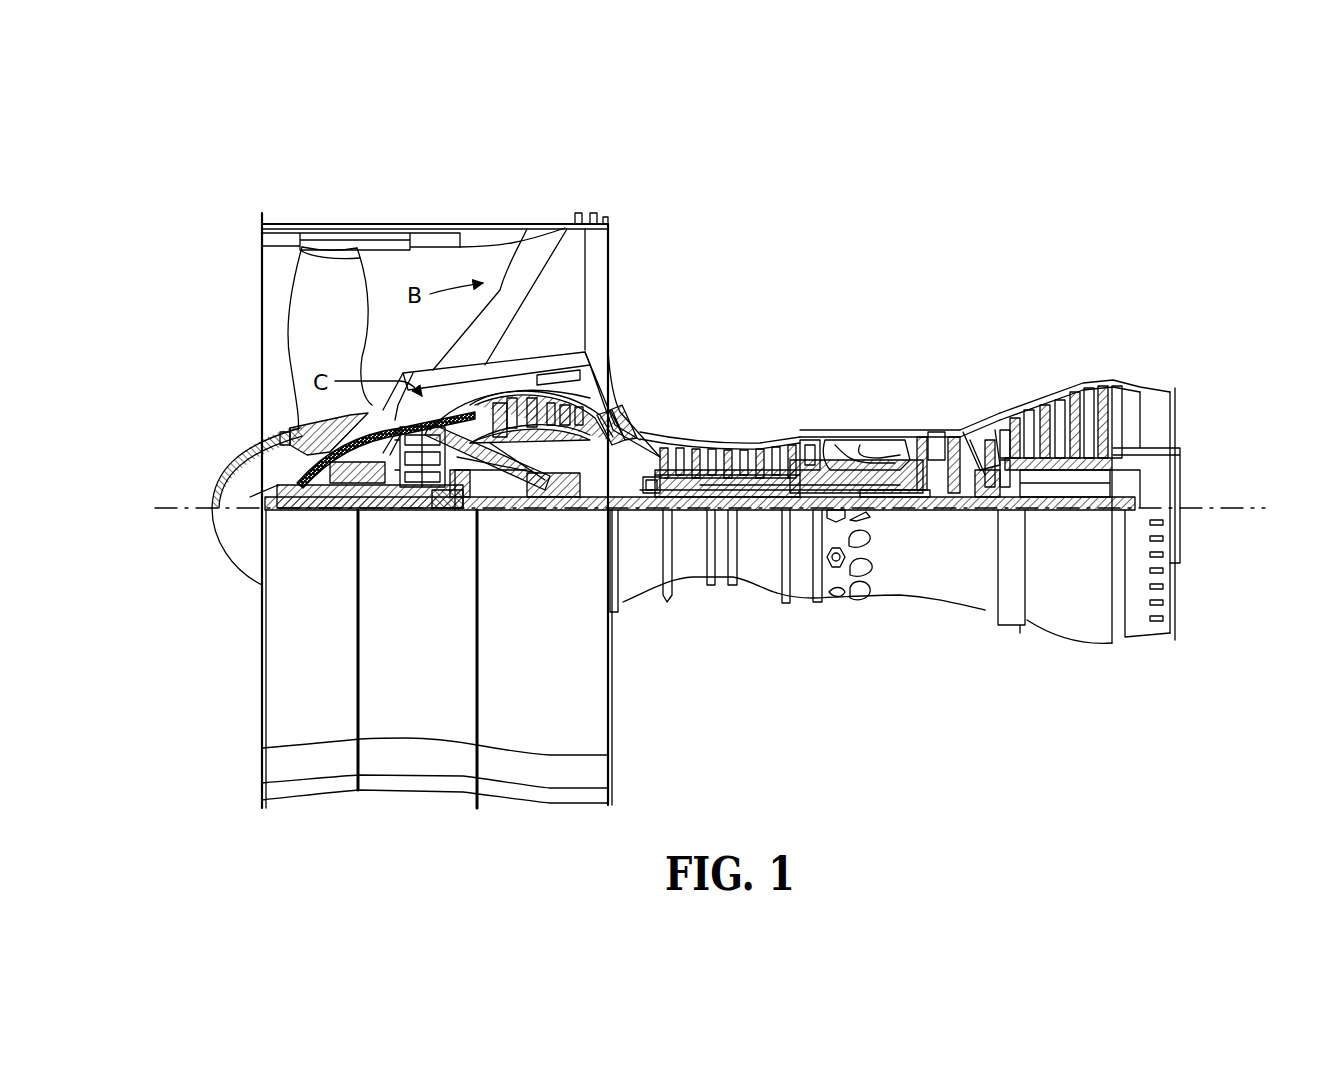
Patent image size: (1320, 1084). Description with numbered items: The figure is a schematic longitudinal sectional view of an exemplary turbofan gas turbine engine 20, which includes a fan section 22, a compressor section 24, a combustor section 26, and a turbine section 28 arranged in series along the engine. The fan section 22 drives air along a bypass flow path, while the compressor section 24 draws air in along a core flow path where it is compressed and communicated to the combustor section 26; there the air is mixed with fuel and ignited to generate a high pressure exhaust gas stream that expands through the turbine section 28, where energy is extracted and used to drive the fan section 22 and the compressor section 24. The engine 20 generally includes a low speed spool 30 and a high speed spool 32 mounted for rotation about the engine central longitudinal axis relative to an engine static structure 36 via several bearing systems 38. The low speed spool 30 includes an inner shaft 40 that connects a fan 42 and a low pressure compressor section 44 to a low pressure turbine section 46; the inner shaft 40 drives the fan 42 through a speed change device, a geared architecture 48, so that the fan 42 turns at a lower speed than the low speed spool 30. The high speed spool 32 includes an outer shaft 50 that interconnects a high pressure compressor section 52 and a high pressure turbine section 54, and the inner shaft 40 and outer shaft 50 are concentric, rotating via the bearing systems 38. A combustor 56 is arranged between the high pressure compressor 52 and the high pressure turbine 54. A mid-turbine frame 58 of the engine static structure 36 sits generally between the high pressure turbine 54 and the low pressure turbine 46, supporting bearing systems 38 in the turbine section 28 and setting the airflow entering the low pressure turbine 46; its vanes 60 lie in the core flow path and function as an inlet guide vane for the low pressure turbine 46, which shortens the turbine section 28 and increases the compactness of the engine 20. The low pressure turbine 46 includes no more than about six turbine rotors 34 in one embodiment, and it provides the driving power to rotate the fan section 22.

The gas turbine engine 20 is at (835, 250).
The fan section 22 is at (437, 198).
The compressor section 24 is at (651, 426).
The combustor section 26 is at (865, 395).
The turbine section 28 is at (1033, 378).
The low speed spool 30 is at (762, 516).
The high speed spool 32 is at (795, 468).
The turbine rotors 34 is at (1112, 466).
The engine static structure 36 is at (802, 604).
The bearing systems 38 is at (300, 468).
The inner shaft 40 is at (643, 512).
The fan 42 is at (348, 307).
The low pressure compressor section 44 is at (548, 412).
The low pressure turbine section 46 is at (1088, 392).
The geared architecture 48 is at (363, 493).
The outer shaft 50 is at (872, 492).
The high pressure compressor section 52 is at (733, 450).
The high pressure turbine section 54 is at (937, 440).
The combustor 56 is at (900, 468).
The mid-turbine frame 58 is at (988, 408).
The vanes 60 is at (1010, 505).